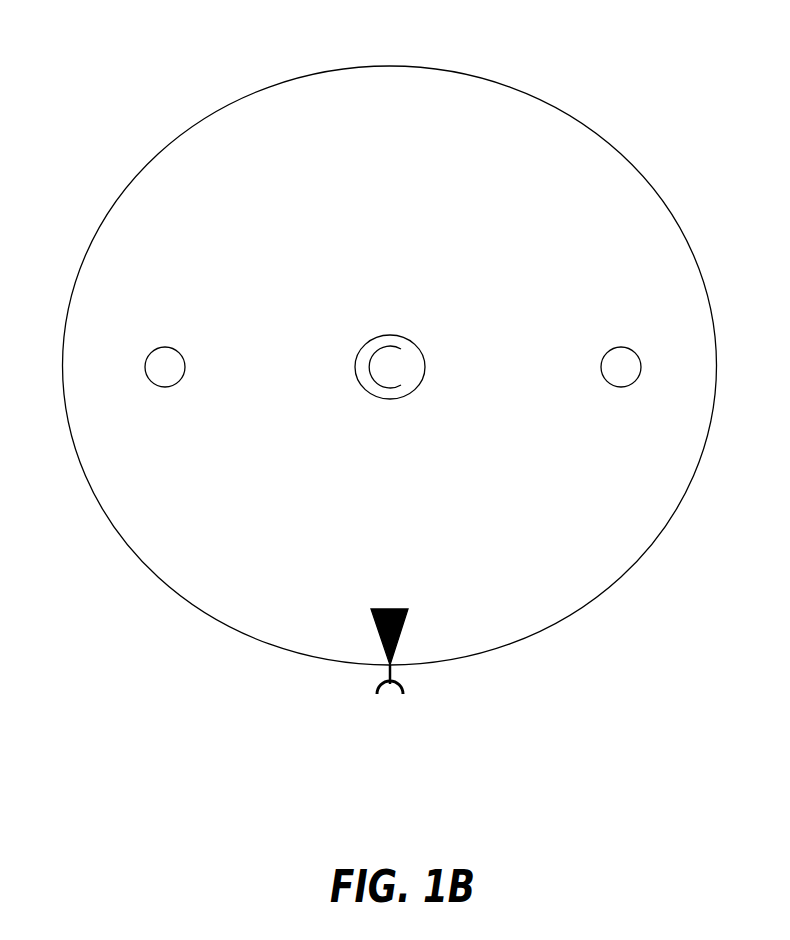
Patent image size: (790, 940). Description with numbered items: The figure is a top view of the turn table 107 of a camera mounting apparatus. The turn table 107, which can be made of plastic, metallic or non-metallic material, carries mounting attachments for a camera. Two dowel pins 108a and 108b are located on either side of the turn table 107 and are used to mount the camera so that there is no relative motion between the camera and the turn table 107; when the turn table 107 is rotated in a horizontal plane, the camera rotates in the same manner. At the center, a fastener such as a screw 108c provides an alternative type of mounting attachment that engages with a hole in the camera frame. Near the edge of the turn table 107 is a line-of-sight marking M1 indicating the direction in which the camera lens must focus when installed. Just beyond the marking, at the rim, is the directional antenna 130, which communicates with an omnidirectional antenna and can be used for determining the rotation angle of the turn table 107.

The turn table 107 is at (293, 77).
The dowel pin 108a is at (613, 347).
The dowel pin 108b is at (165, 347).
The screw 108c is at (387, 334).
The line-of-sight marking M1 is at (393, 610).
The directional antenna 130 is at (378, 692).